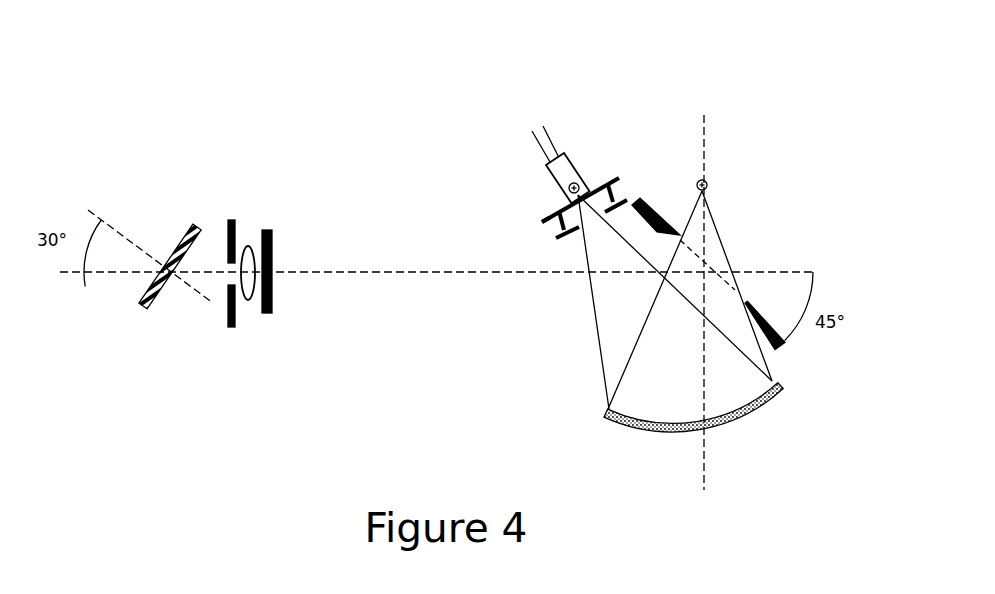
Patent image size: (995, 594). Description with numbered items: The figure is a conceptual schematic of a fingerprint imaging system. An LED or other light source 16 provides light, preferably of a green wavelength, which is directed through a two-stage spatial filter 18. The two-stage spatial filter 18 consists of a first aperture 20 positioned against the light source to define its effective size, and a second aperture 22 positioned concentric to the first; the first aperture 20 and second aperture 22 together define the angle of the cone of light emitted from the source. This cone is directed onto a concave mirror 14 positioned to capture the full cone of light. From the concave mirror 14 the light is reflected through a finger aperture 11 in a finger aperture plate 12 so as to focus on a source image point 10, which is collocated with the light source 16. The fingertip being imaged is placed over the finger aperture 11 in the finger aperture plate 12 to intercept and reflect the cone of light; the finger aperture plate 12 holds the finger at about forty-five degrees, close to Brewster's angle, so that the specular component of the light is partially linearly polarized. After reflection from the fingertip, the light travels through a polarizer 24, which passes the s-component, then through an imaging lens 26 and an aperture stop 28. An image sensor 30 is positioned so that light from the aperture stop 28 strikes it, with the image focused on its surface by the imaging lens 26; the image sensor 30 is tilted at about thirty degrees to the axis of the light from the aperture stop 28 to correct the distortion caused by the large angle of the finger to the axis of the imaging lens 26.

The source image point 10 is at (707, 185).
The finger aperture 11 is at (717, 270).
The finger aperture plate 12 is at (649, 200).
The concave mirror 14 is at (603, 418).
The light source 16 is at (563, 152).
The two-stage spatial filter 18 is at (562, 210).
The first aperture 20 is at (543, 221).
The second aperture 22 is at (557, 241).
The polarizer 24 is at (265, 313).
The imaging lens 26 is at (245, 253).
The aperture stop 28 is at (230, 322).
The image sensor 30 is at (187, 238).